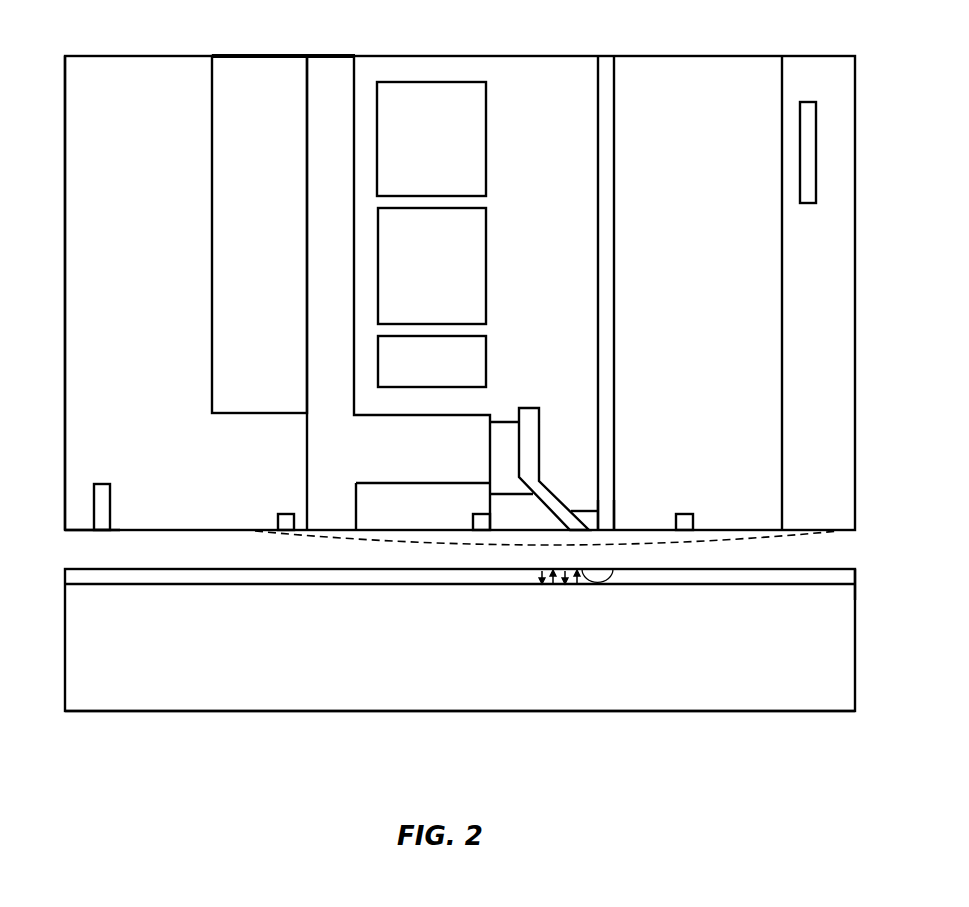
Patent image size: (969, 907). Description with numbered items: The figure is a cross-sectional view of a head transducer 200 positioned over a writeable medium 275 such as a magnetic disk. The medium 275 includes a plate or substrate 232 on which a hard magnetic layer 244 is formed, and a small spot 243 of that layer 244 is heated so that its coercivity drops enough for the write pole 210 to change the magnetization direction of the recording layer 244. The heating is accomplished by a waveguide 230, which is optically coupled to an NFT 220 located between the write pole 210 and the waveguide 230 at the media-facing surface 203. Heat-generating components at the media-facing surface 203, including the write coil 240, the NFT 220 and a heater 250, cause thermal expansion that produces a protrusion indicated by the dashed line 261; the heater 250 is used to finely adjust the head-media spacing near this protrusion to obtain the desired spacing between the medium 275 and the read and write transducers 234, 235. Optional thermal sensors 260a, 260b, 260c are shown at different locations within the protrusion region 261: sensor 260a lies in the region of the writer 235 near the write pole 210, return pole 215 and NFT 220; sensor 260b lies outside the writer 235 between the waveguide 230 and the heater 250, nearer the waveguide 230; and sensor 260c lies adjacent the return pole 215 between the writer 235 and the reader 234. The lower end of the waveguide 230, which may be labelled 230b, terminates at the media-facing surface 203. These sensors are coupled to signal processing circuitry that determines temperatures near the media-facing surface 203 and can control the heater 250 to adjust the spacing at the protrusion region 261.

The head transducer 200 is at (103, 56).
The media-facing surface 203 is at (67, 531).
The write pole 210 is at (530, 410).
The return pole 215 is at (310, 433).
The NFT 220 is at (578, 512).
The waveguide 230 is at (611, 424).
The lower wall portion 230b is at (616, 519).
The substrate 232 is at (460, 640).
The reader 234 is at (111, 504).
The writer 235 is at (181, 181).
The write coil 240 is at (476, 272).
The spot 243 is at (600, 582).
The hard magnetic layer 244 is at (855, 572).
The heater 250 is at (808, 203).
The thermal sensor 260a is at (474, 514).
The thermal sensor 260b is at (688, 514).
The thermal sensor 260c is at (279, 514).
The thermal protrusion 261 is at (757, 542).
The writeable medium 275 is at (228, 727).